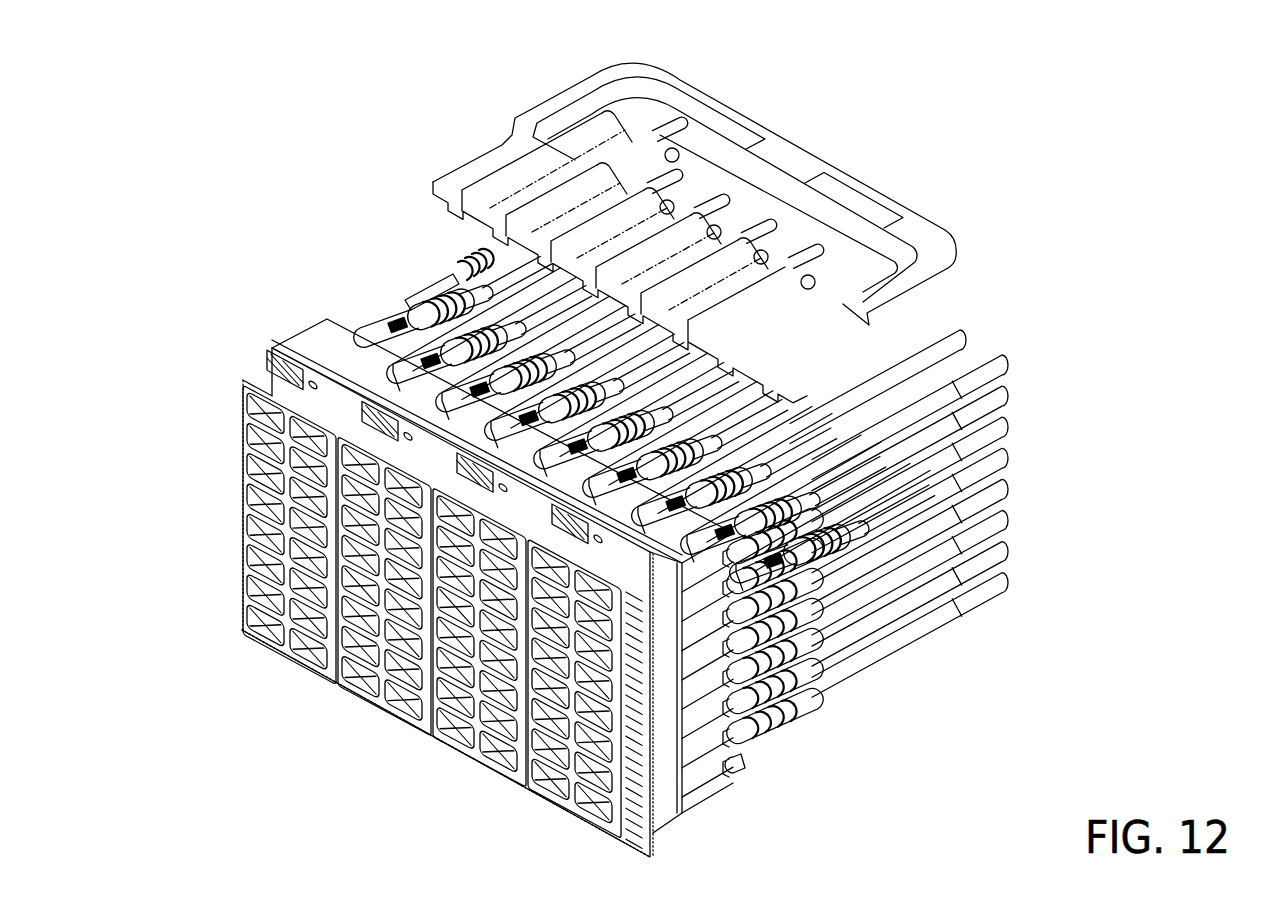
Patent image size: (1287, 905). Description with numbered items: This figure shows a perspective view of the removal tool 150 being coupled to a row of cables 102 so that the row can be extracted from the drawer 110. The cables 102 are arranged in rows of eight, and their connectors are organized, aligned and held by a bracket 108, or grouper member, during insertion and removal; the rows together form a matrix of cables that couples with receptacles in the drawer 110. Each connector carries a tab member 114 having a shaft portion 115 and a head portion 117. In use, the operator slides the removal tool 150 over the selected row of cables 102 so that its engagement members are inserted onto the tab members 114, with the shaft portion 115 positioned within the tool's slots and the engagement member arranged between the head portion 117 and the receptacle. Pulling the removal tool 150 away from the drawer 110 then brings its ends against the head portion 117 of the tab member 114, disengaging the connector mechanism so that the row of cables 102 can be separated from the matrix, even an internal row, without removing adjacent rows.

The cables 102 is at (933, 343).
The bracket 108 is at (330, 343).
The drawer 110 is at (247, 378).
The tab member 114 is at (455, 277).
The shaft portion 115 is at (433, 284).
The head portion 117 is at (477, 262).
The removal tool 150 is at (852, 147).